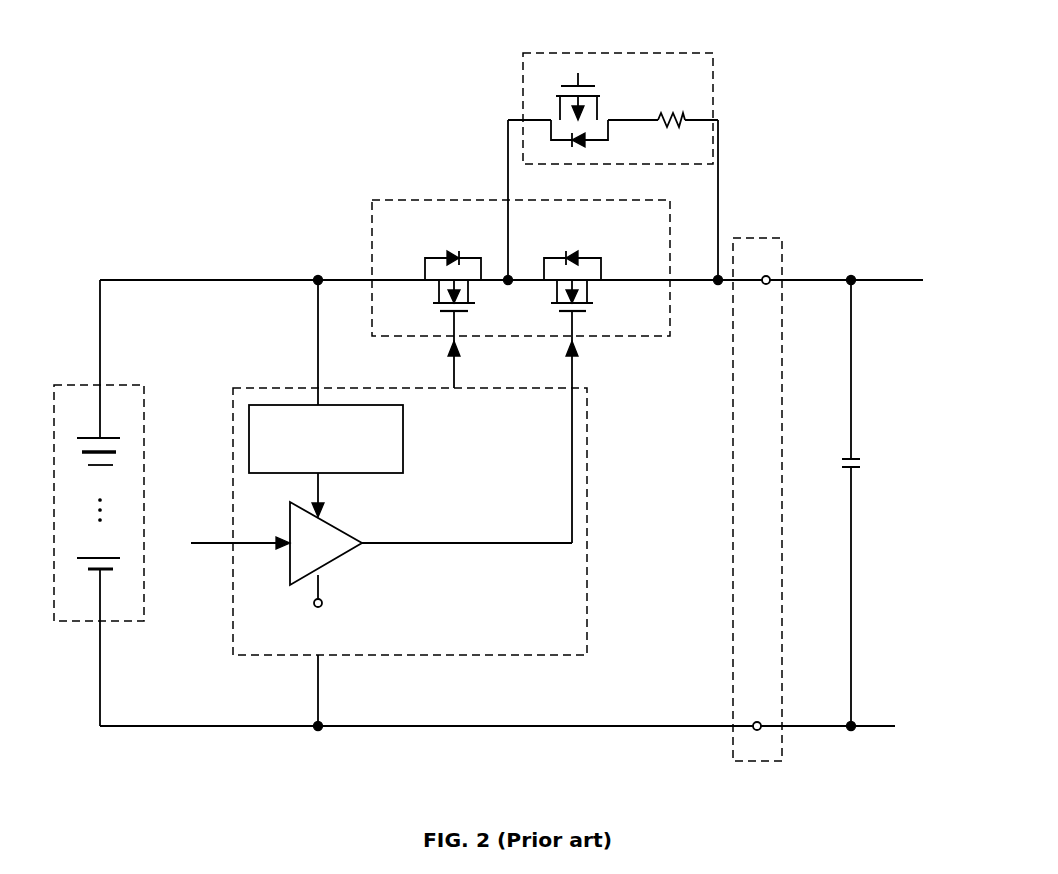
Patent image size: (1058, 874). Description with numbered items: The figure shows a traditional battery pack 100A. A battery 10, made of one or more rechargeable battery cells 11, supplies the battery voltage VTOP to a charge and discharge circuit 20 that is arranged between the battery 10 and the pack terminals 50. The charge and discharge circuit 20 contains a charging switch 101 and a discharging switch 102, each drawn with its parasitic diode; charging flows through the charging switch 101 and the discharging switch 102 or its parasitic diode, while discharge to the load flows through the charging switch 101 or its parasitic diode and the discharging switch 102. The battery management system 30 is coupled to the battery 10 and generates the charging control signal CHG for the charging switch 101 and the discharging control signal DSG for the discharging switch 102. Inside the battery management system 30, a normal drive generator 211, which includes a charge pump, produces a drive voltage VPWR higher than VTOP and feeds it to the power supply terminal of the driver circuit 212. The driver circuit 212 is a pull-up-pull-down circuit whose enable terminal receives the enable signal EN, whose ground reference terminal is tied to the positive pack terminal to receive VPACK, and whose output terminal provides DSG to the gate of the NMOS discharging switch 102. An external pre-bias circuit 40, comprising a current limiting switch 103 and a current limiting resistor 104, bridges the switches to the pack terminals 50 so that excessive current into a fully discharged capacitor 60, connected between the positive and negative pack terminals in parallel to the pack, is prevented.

The battery pack 100A is at (314, 74).
The battery 10 is at (99, 485).
The battery cell 11 is at (107, 436).
The charge and discharge circuit 20 is at (409, 200).
The charging switch 101 is at (425, 288).
The discharging switch 102 is at (545, 288).
The battery management system 30 is at (417, 657).
The normal drive generator 211 is at (405, 440).
The driver circuit 212 is at (340, 560).
The external pre-bias circuit 40 is at (675, 53).
The current limiting switch 103 is at (602, 106).
The current limiting resistor 104 is at (680, 103).
The pack terminals 50 is at (776, 242).
The capacitor 60 is at (838, 460).